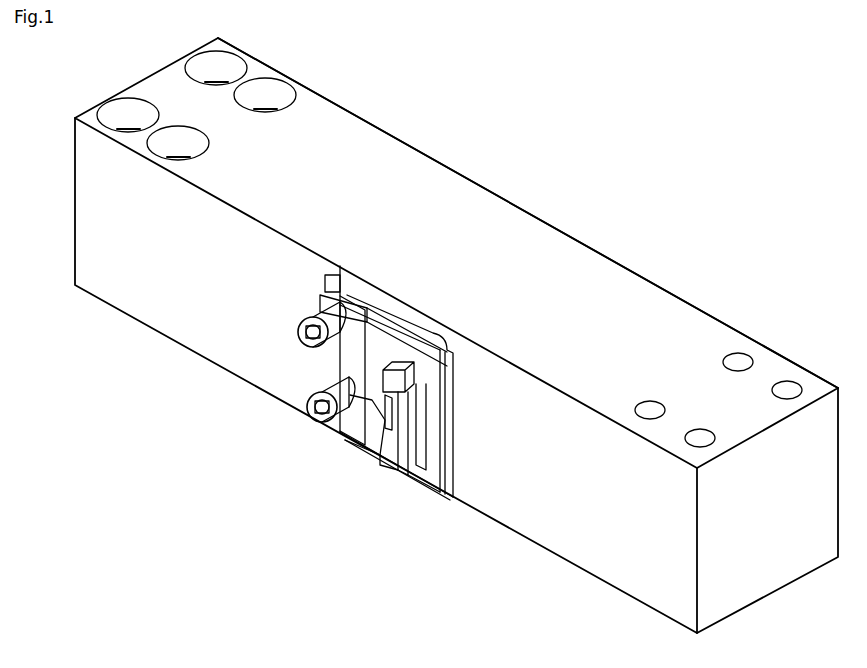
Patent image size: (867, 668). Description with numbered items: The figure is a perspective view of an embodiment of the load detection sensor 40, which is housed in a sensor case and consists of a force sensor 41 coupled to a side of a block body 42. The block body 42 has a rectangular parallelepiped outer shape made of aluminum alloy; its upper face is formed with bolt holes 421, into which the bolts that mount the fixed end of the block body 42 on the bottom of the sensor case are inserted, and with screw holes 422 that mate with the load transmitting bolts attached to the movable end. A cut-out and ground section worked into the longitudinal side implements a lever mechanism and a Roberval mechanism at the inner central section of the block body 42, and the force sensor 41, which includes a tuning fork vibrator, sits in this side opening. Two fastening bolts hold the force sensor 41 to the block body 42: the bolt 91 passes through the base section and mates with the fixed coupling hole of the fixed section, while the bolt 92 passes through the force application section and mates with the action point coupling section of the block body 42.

The load detection sensor 40 is at (564, 122).
The block body 42 is at (585, 244).
The bolt holes 421 is at (247, 70).
The screw holes 422 is at (742, 353).
The force sensor 41 is at (367, 428).
The bolt 91 is at (312, 404).
The bolt 92 is at (298, 326).